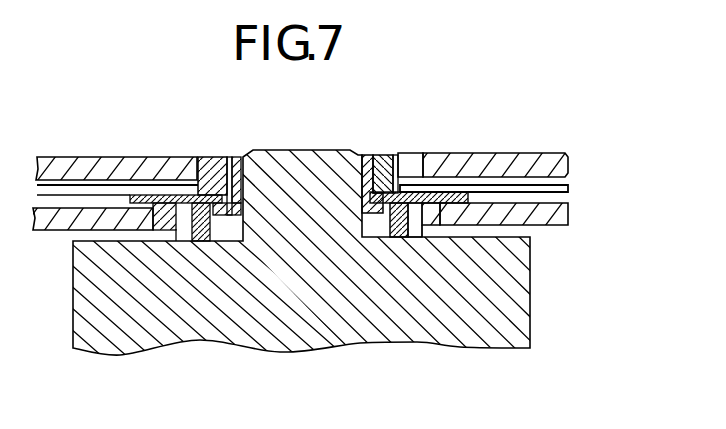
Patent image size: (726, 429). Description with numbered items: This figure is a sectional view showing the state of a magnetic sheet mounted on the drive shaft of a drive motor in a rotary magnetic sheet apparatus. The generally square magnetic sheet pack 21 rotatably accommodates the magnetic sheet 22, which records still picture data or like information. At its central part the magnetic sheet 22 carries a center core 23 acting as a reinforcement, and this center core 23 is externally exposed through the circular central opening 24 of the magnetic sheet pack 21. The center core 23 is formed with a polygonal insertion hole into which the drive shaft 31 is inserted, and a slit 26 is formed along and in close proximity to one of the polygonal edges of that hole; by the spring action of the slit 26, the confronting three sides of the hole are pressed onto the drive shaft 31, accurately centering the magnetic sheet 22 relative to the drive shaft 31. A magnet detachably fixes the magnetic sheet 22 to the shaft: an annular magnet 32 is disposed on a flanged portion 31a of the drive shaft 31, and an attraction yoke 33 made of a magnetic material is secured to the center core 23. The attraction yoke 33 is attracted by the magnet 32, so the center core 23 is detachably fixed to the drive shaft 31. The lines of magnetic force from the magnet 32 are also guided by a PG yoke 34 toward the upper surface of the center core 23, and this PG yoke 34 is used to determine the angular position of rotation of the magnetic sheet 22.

The magnetic sheet pack 21 is at (535, 152).
The magnetic sheet 22 is at (545, 186).
The center core 23 is at (201, 157).
The circular central opening 24 is at (415, 163).
The slit 26 is at (233, 157).
The drive shaft 31 is at (307, 157).
The flanged portion 31a is at (412, 208).
The annular magnet 32 is at (395, 207).
The attraction yoke 33 is at (450, 196).
The PG yoke 34 is at (386, 155).